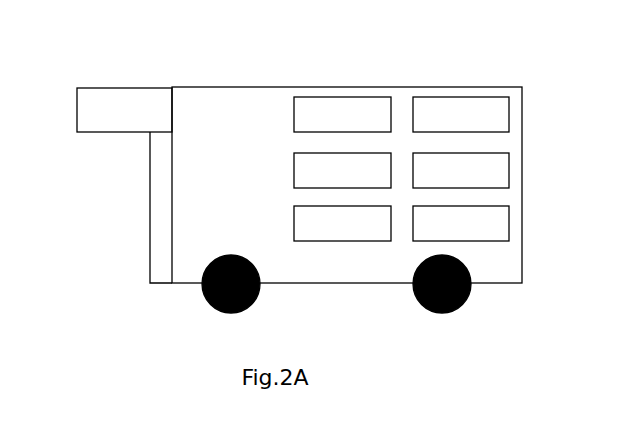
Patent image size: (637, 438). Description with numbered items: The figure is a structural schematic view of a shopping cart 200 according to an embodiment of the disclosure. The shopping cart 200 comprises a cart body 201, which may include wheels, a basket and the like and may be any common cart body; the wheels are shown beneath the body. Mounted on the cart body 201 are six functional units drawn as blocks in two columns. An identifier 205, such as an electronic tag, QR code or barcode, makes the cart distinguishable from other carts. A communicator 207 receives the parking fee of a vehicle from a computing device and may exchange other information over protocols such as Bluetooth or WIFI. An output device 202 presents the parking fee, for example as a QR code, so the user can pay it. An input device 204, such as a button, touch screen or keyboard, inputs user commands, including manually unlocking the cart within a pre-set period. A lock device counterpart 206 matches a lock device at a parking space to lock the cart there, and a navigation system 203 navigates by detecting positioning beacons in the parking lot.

The shopping cart 200 is at (150, 67).
The cart body 201 is at (299, 185).
The output device 202 is at (342, 114).
The navigation system 203 is at (342, 170).
The input device 204 is at (342, 223).
The identifier 205 is at (461, 114).
The lock device counterpart 206 is at (461, 170).
The communicator 207 is at (461, 223).